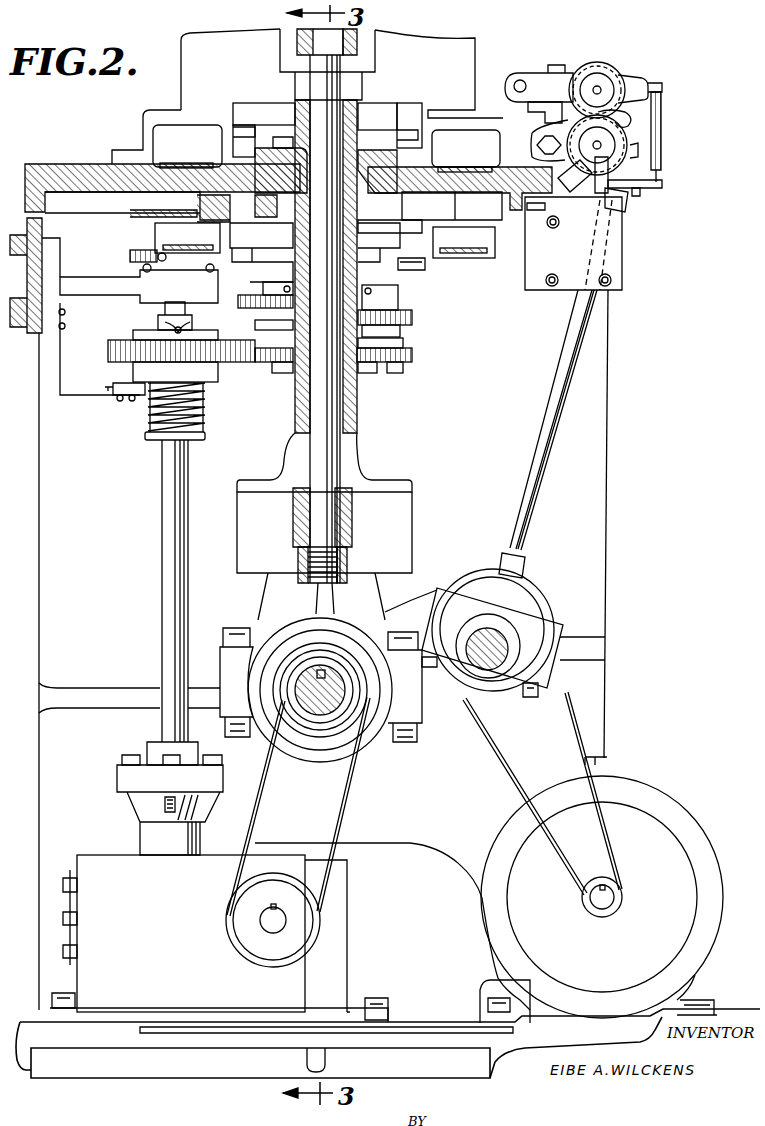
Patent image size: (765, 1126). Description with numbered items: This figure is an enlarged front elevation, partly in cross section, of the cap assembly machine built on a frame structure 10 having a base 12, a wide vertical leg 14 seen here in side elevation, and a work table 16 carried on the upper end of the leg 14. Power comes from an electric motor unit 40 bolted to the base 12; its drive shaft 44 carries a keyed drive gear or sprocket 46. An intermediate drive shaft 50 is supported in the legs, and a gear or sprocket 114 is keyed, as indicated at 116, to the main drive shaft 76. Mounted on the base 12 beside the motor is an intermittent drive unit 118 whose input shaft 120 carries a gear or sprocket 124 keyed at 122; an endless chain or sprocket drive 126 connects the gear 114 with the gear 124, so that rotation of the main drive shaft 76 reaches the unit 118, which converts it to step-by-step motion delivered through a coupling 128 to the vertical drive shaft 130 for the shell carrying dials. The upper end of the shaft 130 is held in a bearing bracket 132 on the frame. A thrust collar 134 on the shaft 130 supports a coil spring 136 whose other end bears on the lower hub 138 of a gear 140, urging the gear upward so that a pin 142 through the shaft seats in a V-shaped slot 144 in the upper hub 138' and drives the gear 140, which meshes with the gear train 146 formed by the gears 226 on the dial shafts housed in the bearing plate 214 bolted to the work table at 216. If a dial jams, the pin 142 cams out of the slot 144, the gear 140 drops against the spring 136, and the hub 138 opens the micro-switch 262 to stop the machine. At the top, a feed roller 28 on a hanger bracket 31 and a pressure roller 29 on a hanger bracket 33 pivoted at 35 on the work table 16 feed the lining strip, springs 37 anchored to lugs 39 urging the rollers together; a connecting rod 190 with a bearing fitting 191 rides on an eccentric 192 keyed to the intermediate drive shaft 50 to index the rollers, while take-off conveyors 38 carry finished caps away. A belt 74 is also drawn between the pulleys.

The frame structure 10 is at (609, 605).
The base 12 is at (22, 1078).
The vertical legs or standards 14 is at (608, 445).
The work table 16 is at (45, 163).
The feed roller 28 is at (640, 150).
The pressure roller 29 is at (603, 66).
The hanger bracket 31 is at (653, 132).
The hanger bracket 33 is at (636, 80).
The pivotal mounting 35 is at (522, 80).
The springs 37 is at (660, 178).
The take-off conveyors 38 is at (187, 166).
The lugs 39 is at (637, 191).
The electric motor unit 40 is at (650, 794).
The drive shaft 44 is at (614, 890).
The drive gear or sprocket 46 is at (620, 905).
The intermediate drive shaft 50 is at (487, 630).
The belt 74 is at (600, 758).
The main drive shaft 76 is at (336, 672).
The gear or sprocket 114 is at (370, 735).
The key 116 is at (320, 668).
The intermittent drive unit 118 is at (140, 906).
The input shaft 120 is at (248, 940).
The key 122 is at (277, 909).
The gear or sprocket 124 is at (325, 945).
The endless chain or sprocket drive 126 is at (345, 806).
The coupling 128 is at (117, 780).
The vertical drive shaft 130 is at (163, 592).
The bearing bracket 132 is at (103, 277).
The thrust collar 134 is at (204, 436).
The coil spring 136 is at (203, 408).
The lower hub 138 is at (145, 356).
The upper hub 138' is at (75, 306).
The gear 140 is at (228, 361).
The pin 142 is at (196, 332).
The V-shaped slot 144 is at (170, 326).
The gear train 146 is at (412, 356).
The connecting rod 190 is at (568, 378).
The bearing fitting 191 is at (548, 610).
The eccentric 192 is at (522, 575).
The bearing plate or housing 214 is at (398, 266).
The bolts 216 is at (430, 266).
The gear 226 is at (412, 318).
The micro-switch 262 is at (138, 398).